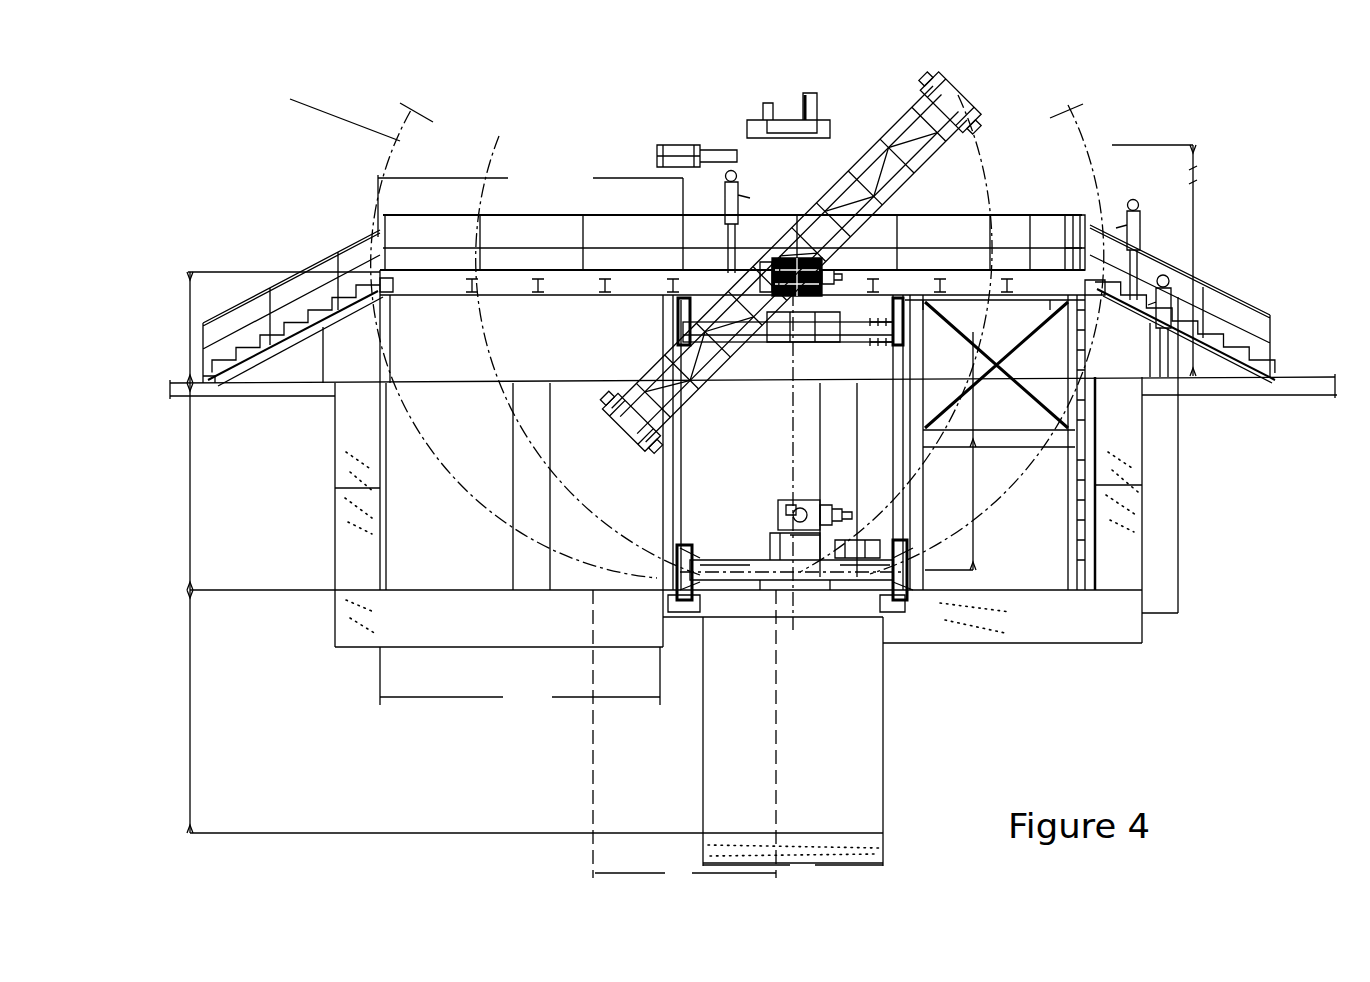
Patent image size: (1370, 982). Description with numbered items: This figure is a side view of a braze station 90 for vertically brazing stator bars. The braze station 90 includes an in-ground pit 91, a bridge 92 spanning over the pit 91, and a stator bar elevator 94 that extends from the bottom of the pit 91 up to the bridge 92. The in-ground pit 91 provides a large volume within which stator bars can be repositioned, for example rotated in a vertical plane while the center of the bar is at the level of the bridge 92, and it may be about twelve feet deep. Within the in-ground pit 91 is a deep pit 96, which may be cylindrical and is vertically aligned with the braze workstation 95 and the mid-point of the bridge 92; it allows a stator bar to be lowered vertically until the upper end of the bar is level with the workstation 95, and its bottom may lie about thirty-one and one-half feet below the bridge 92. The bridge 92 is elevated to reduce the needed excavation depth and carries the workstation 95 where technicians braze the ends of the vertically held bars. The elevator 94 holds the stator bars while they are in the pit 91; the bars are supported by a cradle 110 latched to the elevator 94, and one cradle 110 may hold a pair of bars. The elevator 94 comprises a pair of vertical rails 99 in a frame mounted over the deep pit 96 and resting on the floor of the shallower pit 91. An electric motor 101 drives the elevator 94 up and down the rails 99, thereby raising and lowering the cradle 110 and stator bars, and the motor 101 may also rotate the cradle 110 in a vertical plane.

The braze station 90 is at (957, 670).
The pit 91 is at (335, 556).
The bridge 92 is at (1043, 212).
The stator bar elevator 94 is at (667, 325).
The braze workstation 95 is at (757, 220).
The deep pit 96 is at (883, 734).
The vertical rails 99 is at (663, 507).
The electric motor 101 is at (800, 500).
The cradle 110 is at (897, 136).